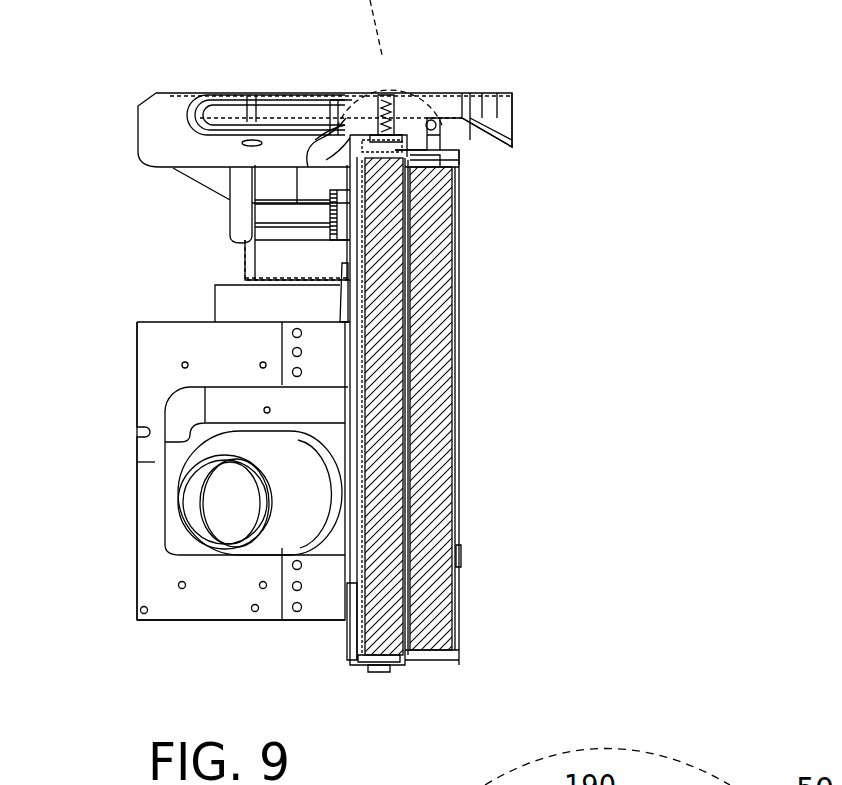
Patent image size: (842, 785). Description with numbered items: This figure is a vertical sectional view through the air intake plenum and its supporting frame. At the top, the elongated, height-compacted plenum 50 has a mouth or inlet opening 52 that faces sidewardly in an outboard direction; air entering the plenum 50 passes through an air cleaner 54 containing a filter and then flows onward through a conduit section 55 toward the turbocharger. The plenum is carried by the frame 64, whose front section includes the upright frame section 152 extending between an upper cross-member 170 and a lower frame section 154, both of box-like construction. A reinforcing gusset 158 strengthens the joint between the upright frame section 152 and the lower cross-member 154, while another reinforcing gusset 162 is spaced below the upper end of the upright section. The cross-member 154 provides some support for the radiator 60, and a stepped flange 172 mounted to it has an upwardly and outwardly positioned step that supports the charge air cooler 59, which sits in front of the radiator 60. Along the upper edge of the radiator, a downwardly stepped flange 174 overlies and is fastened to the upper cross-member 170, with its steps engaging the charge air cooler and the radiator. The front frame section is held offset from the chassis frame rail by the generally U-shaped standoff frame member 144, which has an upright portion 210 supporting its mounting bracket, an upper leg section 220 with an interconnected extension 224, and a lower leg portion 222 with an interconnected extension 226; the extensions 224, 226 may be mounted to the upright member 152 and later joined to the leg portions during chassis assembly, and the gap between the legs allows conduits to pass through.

The air plenum 50 is at (457, 86).
The opening 52 is at (503, 118).
The second upright frame section 152 is at (443, 150).
The upper cross-member 170 is at (447, 110).
The downwardly stepped flange 174 is at (362, 118).
The reinforcing gusset 162 is at (350, 252).
The extension 224 is at (330, 337).
The air cleaner 54 is at (222, 302).
The upper leg section 220 is at (180, 338).
The upright portion 210 is at (147, 488).
The standoff frame member 144 is at (133, 582).
The conduit section 55 is at (190, 505).
The lower leg portion 222 is at (203, 607).
The extension 226 is at (318, 603).
The frame 64 is at (145, 648).
The reinforcing gusset 158 is at (345, 638).
The radiator 60 is at (385, 420).
The charge air cooler 59 is at (433, 497).
The lower frame section 154 is at (390, 655).
The stepped flange 172 is at (423, 653).